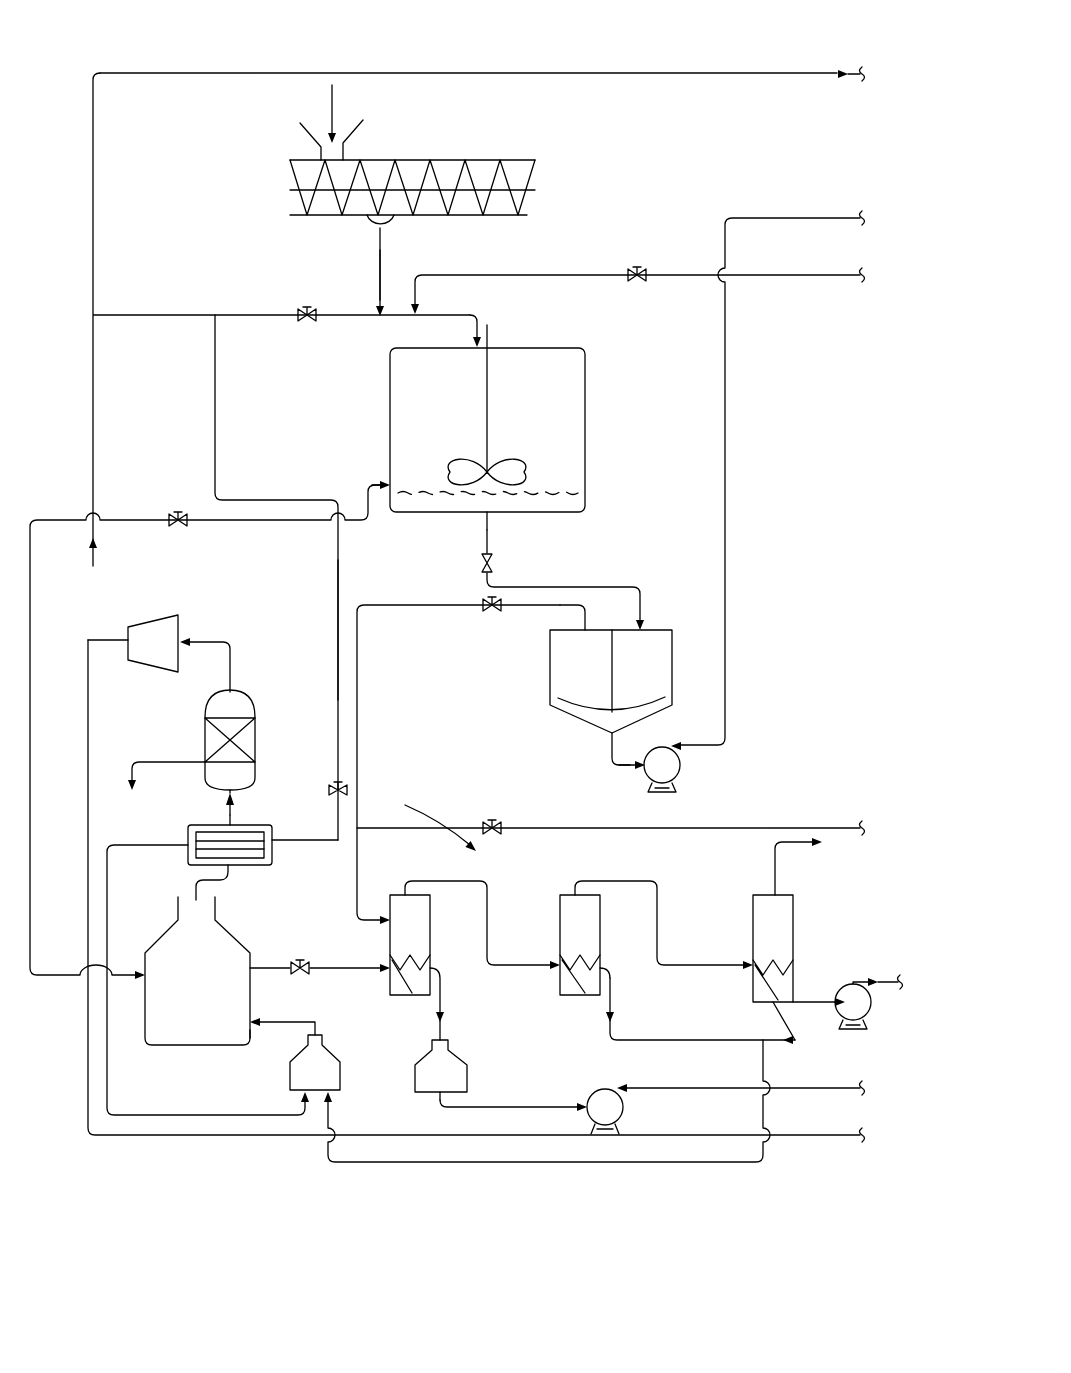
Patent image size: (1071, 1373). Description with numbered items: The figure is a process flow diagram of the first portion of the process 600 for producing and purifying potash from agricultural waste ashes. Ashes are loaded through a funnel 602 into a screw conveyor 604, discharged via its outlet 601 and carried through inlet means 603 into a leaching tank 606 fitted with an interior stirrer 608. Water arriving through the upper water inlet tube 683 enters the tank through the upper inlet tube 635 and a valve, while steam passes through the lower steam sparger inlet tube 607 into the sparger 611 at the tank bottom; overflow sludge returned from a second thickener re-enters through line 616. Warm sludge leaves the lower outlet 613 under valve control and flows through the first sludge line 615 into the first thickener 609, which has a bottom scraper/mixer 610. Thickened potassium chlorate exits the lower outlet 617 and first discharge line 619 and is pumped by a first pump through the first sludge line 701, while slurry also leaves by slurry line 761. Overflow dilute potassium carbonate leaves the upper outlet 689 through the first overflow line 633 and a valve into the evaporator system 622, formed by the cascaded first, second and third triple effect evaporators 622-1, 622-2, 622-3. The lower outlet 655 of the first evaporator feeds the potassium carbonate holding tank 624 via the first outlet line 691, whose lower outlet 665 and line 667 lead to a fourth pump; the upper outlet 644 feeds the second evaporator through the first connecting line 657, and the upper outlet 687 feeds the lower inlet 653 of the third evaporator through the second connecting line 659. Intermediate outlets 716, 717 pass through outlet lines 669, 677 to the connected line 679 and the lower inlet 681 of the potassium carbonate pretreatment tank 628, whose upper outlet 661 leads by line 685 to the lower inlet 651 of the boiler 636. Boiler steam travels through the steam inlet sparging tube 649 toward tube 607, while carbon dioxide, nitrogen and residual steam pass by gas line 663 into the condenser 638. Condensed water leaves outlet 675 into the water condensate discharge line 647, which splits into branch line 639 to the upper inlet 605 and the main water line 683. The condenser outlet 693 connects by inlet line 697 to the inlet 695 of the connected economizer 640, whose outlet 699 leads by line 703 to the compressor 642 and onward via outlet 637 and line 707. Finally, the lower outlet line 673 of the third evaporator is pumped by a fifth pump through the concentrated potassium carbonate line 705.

The process 600 is at (178, 60).
The outlet 601 is at (395, 224).
The funnel 602 is at (321, 140).
The inlet means 603 is at (380, 285).
The screw conveyor 604 is at (455, 160).
The upper inlet 605 is at (472, 346).
The leaching tank 606 is at (587, 410).
The lower steam sparger inlet tube 607 is at (205, 522).
The interior stirrer 608 is at (490, 430).
The first thickener 609 is at (550, 690).
The bottom scraper/mixer 610 is at (612, 700).
The sparger 611 is at (388, 480).
The lower outlet 613 is at (492, 516).
The first sludge line 615 is at (486, 530).
The line 616 is at (530, 278).
The lower outlet 617 is at (610, 735).
The first discharge line 619 is at (611, 760).
The evaporator system 622 is at (422, 820).
The first triple effect evaporator 622-1 is at (427, 919).
The second triple effect evaporator 622-2 is at (601, 919).
The third triple effect evaporator 622-3 is at (759, 934).
The potassium carbonate holding tank 624 is at (440, 1096).
The potassium carbonate pretreatment tank 628 is at (315, 1078).
The first overflow line 633 is at (458, 760).
The upper inlet tube 635 is at (125, 315).
The boiler 636 is at (200, 1045).
The outlet 637 is at (128, 650).
The condenser 638 is at (188, 830).
The branch line 639 is at (215, 315).
The connected economizer 640 is at (205, 747).
The compressor 642 is at (165, 630).
The upper outlet 644 is at (432, 886).
The water condensate discharge line 647 is at (340, 595).
The steam inlet sparging tube 649 is at (145, 975).
The lower inlet 651 is at (252, 1040).
The lower inlet 653 is at (770, 1000).
The lower outlet 655 is at (442, 972).
The first connecting line 657 is at (490, 930).
The second connecting line 659 is at (660, 922).
The upper outlet 661 is at (340, 1045).
The gas line 663 is at (232, 876).
The lower outlet 665 is at (465, 1088).
The line 667 is at (520, 1107).
The outlet line 669 is at (617, 1040).
The lower outlet line 673 is at (804, 1021).
The outlet 675 is at (272, 850).
The outlet line 677 is at (795, 1045).
The connected line 679 is at (763, 1070).
The lower inlet 681 is at (340, 1092).
The upper water inlet tube 683 is at (648, 74).
The line 685 is at (283, 1025).
The upper outlet 687 is at (602, 886).
The upper outlet 689 is at (585, 630).
The first outlet line 691 is at (438, 1000).
The outlet 693 is at (242, 823).
The inlet 695 is at (246, 797).
The inlet line 697 is at (222, 812).
The outlet 699 is at (238, 692).
The first sludge line 701 is at (725, 520).
The line 703 is at (195, 642).
The concentrated potassium carbonate line 705 is at (882, 975).
The line 707 is at (88, 768).
The intermediate outlet 716 is at (625, 959).
The intermediate outlet 717 is at (797, 965).
The slurry line 761 is at (545, 828).